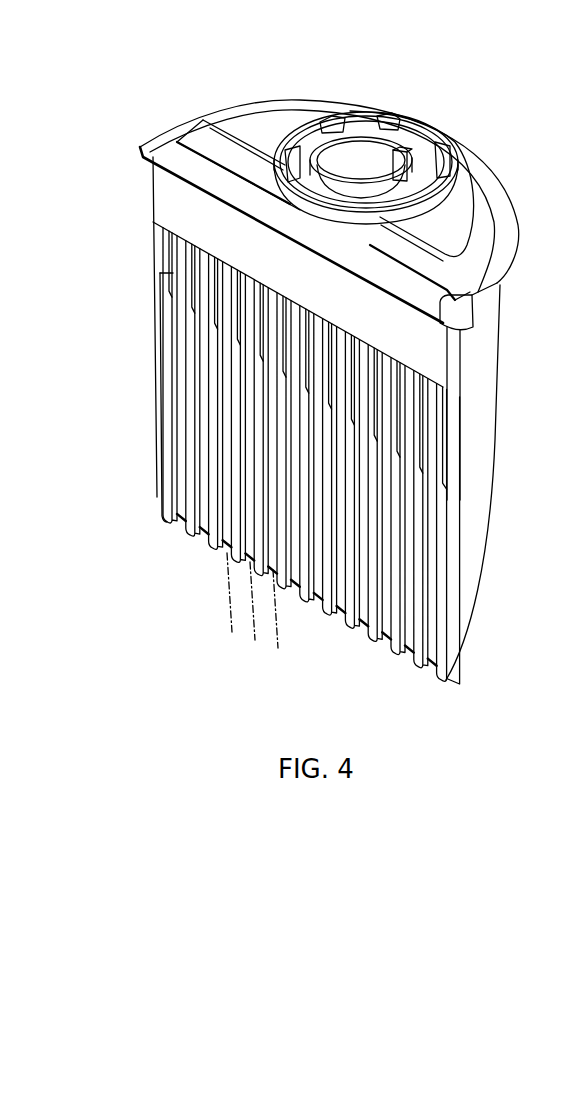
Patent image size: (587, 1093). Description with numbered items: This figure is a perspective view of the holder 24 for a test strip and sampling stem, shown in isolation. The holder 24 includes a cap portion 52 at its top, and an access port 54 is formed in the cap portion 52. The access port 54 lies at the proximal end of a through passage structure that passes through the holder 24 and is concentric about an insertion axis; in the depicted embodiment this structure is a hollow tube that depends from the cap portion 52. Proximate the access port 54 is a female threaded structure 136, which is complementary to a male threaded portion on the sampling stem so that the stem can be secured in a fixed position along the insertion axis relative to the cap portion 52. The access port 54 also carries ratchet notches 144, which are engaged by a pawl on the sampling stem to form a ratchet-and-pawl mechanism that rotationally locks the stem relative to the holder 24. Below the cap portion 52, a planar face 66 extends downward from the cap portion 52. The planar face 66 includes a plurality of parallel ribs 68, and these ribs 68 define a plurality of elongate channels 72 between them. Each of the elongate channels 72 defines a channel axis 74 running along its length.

The holder 24 is at (155, 73).
The cap portion 52 is at (291, 100).
The access port 54 is at (433, 124).
The female threaded structure 136 is at (398, 148).
The ratchet notches 144 is at (384, 115).
The planar face 66 is at (237, 370).
The parallel ribs 68 is at (305, 432).
The elongate channels 72 is at (275, 485).
The channel axis 74 is at (273, 600).